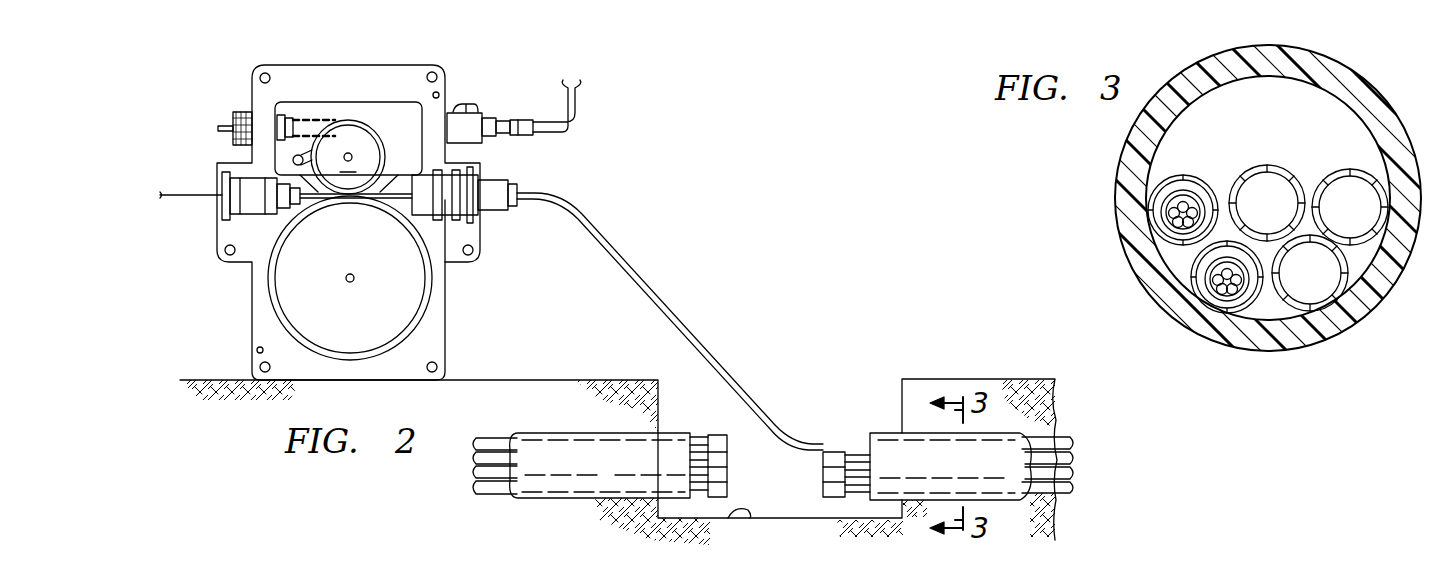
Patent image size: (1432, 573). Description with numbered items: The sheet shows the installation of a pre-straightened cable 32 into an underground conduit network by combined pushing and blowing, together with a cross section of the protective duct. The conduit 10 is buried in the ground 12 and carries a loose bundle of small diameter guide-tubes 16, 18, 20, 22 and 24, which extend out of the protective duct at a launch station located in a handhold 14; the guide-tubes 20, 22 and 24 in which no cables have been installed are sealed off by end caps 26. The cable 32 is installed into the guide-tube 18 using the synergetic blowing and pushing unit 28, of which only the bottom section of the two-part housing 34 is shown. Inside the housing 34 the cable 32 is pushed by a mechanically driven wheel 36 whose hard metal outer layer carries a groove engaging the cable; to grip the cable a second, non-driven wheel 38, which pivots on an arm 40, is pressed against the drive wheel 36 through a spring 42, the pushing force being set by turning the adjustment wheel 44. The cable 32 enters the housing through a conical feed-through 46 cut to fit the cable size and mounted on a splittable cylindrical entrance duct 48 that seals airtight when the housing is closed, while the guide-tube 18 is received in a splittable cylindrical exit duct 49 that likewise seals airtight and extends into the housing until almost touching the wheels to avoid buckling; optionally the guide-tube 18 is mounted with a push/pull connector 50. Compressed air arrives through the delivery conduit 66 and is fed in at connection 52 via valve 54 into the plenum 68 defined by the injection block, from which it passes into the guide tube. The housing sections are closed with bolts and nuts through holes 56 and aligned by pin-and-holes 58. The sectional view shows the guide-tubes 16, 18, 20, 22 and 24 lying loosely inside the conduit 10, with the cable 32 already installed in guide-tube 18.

In FIG. 2, the conduit 10 is at (543, 500).
In FIG. 3, the conduit 10 is at (1385, 99).
In FIG. 2, the ground 12 is at (540, 378).
In FIG. 2, the handhold 14 is at (745, 520).
In FIG. 3, the guide-tube 16 is at (1248, 305).
In FIG. 2, the guide-tube 18 is at (686, 297).
In FIG. 3, the guide-tube 18 is at (1165, 245).
In FIG. 3, the guide-tube 20 is at (1262, 168).
In FIG. 3, the guide-tube 22 is at (1338, 170).
In FIG. 3, the guide-tube 24 is at (1345, 278).
In FIG. 2, the end cap 26 is at (712, 435).
In FIG. 2, the blowing and pushing unit 28 is at (240, 305).
In FIG. 2, the cable 32 is at (163, 190).
In FIG. 3, the cable 32 is at (1180, 196).
In FIG. 2, the housing 34 is at (445, 330).
In FIG. 2, the drive wheel 36 is at (385, 320).
In FIG. 2, the second wheel 38 is at (372, 143).
In FIG. 2, the arm 40 is at (293, 160).
In FIG. 2, the spring 42 is at (318, 112).
In FIG. 2, the adjustment wheel 44 is at (240, 110).
In FIG. 2, the conical feed-through 46 is at (320, 200).
In FIG. 2, the entrance duct 48 is at (245, 218).
In FIG. 2, the exit duct 49 is at (445, 215).
In FIG. 2, the push/pull connector 50 is at (500, 210).
In FIG. 2, the connection 52 is at (525, 118).
In FIG. 2, the valve 54 is at (500, 117).
In FIG. 2, the holes 56 is at (445, 68).
In FIG. 2, the pin-and-holes 58 is at (441, 95).
In FIG. 2, the delivery conduit 66 is at (580, 105).
In FIG. 2, the plenum 68 is at (450, 150).